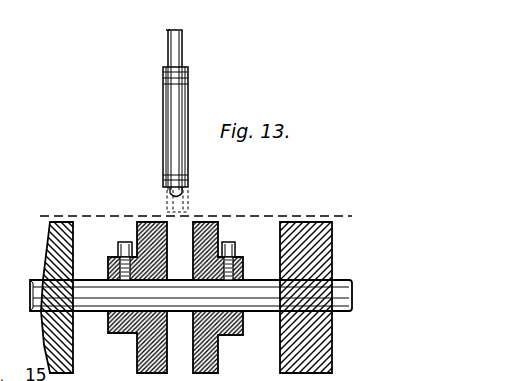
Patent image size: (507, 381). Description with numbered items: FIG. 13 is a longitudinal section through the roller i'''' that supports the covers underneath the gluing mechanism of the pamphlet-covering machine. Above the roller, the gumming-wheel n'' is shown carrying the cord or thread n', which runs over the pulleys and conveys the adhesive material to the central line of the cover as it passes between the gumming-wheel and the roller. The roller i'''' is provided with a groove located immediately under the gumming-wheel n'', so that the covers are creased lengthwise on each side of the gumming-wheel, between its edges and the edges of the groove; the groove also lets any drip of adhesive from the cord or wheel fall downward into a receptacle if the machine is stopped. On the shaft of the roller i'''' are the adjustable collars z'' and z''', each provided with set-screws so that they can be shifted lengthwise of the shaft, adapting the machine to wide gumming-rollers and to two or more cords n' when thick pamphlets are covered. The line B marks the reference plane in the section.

The reference line B is at (196, 204).
The cord n' is at (183, 48).
The gumming-roller n'' is at (187, 139).
The adjustable collar z'' is at (137, 297).
The adjustable collar z''' is at (224, 297).
The roller i'''' is at (189, 297).